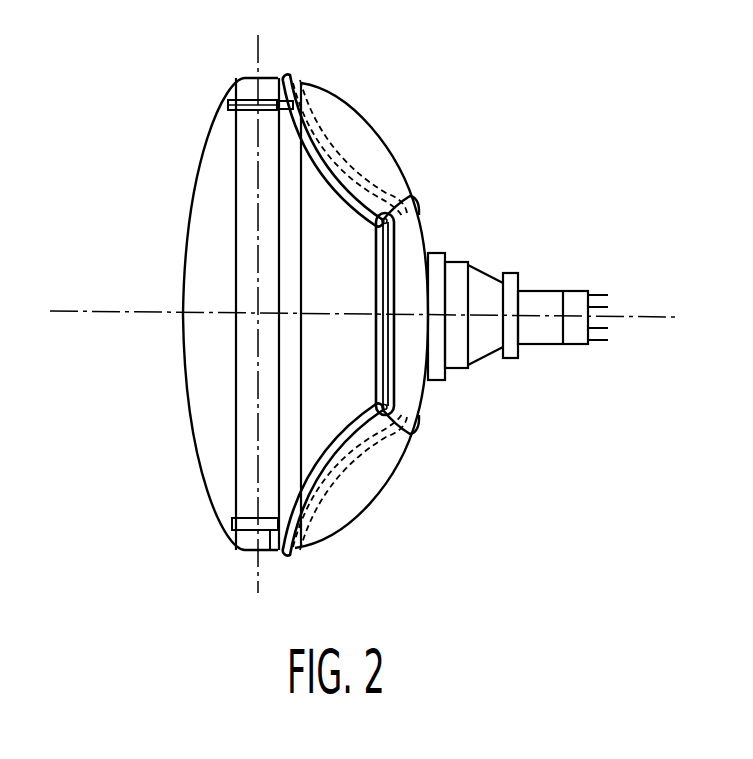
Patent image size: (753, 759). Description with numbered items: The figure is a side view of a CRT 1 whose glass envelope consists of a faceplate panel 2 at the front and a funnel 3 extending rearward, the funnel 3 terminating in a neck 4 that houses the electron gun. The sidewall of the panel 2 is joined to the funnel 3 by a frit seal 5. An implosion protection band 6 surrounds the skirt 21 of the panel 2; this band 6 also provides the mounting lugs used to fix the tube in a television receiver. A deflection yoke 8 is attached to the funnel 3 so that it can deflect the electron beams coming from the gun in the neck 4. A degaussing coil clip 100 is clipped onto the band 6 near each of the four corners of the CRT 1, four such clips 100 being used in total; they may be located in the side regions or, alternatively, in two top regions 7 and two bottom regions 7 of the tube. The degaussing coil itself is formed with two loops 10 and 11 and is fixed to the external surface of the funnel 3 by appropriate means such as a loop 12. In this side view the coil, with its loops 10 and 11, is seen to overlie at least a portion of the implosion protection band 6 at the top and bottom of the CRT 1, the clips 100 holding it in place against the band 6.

The CRT 1 is at (166, 270).
The faceplate panel 2 is at (203, 167).
The funnel 3 is at (398, 168).
The neck 4 is at (545, 292).
The frit seal 5 is at (300, 362).
The implosion protection band 6 is at (244, 482).
The top region 7 is at (248, 98).
The deflection yoke 8 is at (457, 366).
The loop 10 is at (328, 172).
The loop 11 is at (328, 458).
The loop 12 is at (390, 250).
The skirt 21 is at (267, 557).
The degaussing coil clip 100 is at (228, 104).